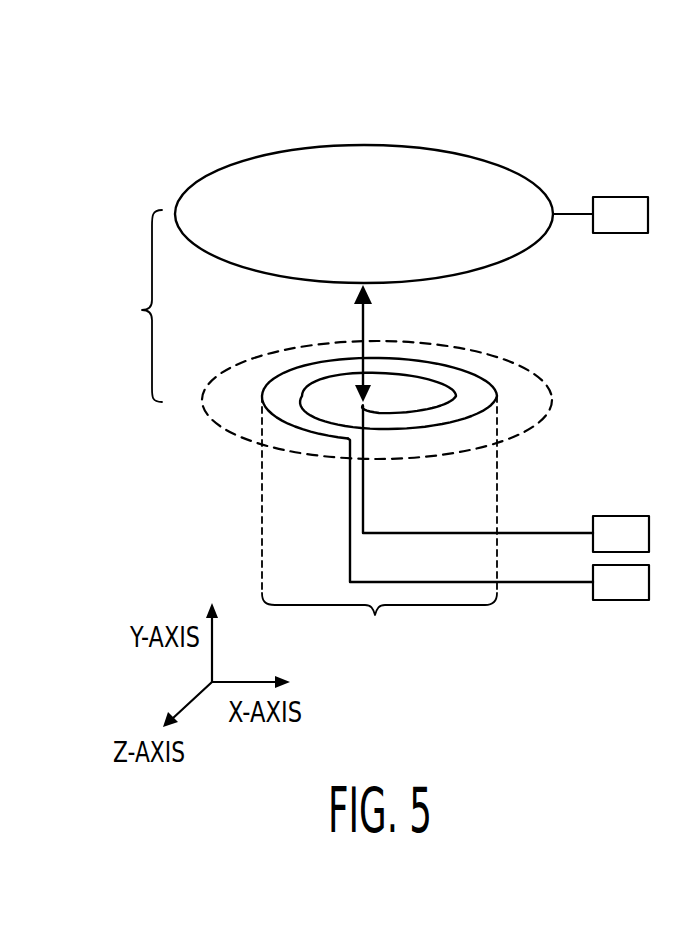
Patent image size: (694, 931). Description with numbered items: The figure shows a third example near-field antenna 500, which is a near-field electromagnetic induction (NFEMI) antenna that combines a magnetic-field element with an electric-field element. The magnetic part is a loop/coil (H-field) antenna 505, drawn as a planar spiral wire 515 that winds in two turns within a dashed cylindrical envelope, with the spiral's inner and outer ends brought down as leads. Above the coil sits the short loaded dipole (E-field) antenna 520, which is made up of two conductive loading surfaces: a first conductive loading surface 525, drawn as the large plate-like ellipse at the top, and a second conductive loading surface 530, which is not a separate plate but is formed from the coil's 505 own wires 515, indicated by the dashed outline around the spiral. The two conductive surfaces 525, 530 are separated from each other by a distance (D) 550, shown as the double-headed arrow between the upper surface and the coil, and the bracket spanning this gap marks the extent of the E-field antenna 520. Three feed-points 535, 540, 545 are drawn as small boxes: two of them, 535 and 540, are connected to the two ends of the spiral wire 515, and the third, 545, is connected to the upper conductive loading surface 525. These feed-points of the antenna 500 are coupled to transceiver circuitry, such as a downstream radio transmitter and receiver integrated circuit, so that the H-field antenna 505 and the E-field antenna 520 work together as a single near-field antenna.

The near-field antenna 500 is at (158, 123).
The loop/coil (H-field) antenna 505 is at (379, 525).
The planar spiral wire 515 is at (472, 372).
The short loaded dipole (E-field) antenna 520 is at (130, 306).
The first conductive loading surface 525 is at (388, 144).
The second conductive loading surface 530 is at (423, 342).
The feed-point 535 is at (617, 516).
The feed-point 540 is at (620, 600).
The feed-point 545 is at (616, 197).
The distance (D) 550 is at (363, 323).